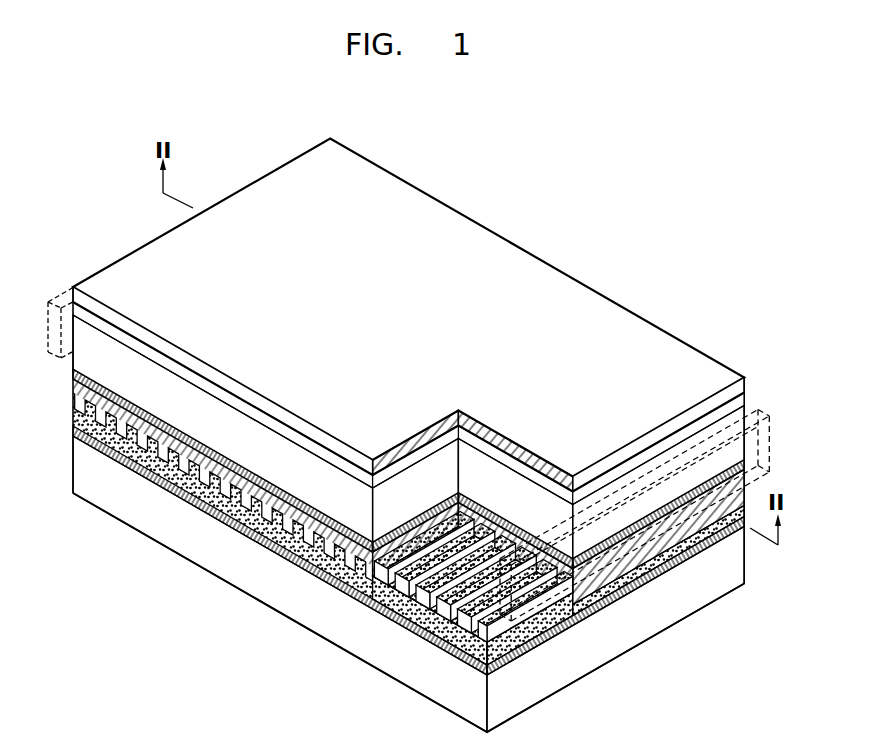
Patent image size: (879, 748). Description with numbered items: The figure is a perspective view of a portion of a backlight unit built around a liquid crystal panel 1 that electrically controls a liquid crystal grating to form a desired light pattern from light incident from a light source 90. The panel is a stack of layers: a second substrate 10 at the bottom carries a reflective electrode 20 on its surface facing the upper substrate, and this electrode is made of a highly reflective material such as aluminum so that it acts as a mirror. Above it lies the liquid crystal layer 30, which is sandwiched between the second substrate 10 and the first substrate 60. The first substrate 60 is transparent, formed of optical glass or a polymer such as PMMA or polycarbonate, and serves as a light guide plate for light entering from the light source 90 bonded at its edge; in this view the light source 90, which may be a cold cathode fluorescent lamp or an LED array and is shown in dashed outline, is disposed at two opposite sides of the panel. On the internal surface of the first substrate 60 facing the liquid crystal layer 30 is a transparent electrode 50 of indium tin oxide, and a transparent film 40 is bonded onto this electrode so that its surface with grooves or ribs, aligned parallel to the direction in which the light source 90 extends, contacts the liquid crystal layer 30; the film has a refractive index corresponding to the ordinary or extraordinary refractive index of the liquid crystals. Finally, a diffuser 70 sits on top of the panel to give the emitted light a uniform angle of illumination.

The liquid crystal panel 1 is at (160, 612).
The second substrate 10 is at (271, 599).
The reflective electrode 20 is at (143, 467).
The liquid crystal layer 30 is at (77, 428).
The transparent film 40 is at (75, 398).
The transparent electrode 50 is at (75, 378).
The first substrate 60 is at (85, 340).
The diffuser 70 is at (580, 287).
The light source 90 is at (768, 430).